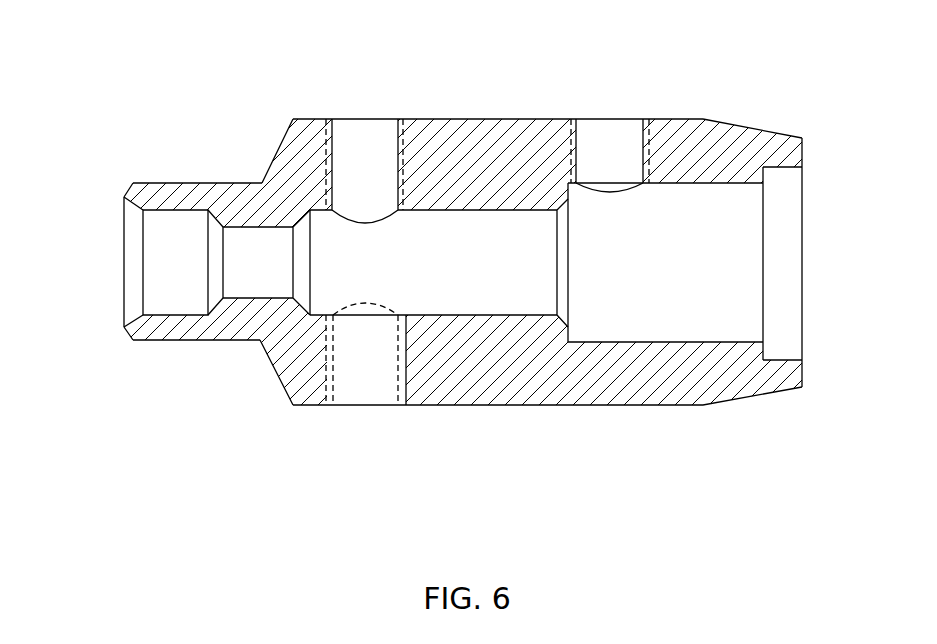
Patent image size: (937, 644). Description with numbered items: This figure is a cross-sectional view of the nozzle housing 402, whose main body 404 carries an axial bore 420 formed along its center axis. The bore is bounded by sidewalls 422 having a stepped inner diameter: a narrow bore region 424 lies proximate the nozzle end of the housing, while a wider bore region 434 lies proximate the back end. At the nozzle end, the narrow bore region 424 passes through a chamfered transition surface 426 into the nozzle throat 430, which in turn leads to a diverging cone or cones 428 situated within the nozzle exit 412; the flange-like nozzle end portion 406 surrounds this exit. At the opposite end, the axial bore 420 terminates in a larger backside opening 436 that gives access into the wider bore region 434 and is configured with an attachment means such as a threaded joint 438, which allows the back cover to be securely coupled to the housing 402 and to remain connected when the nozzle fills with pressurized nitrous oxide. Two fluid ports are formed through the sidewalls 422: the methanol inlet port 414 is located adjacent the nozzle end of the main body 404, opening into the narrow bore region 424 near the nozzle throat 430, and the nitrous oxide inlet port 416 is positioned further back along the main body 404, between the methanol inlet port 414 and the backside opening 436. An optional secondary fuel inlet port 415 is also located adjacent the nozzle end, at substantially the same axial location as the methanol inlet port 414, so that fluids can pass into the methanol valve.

The housing 402 is at (750, 82).
The main body 404 is at (533, 120).
The flange portion 406 is at (212, 215).
The nozzle exit 412 is at (168, 312).
The methanol inlet port 414 is at (397, 158).
The secondary fuel inlet port 415 is at (400, 387).
The nitrous oxide inlet port 416 is at (643, 150).
The axial bore 420 is at (465, 316).
The sidewalls 422 is at (523, 380).
The narrow bore region 424 is at (292, 405).
The chamfered transition surface 426 is at (294, 303).
The diverging cone 428 is at (213, 218).
The nozzle throat 430 is at (257, 340).
The wider bore region 434 is at (657, 342).
The backside opening 436 is at (762, 343).
The threaded joint 438 is at (782, 168).